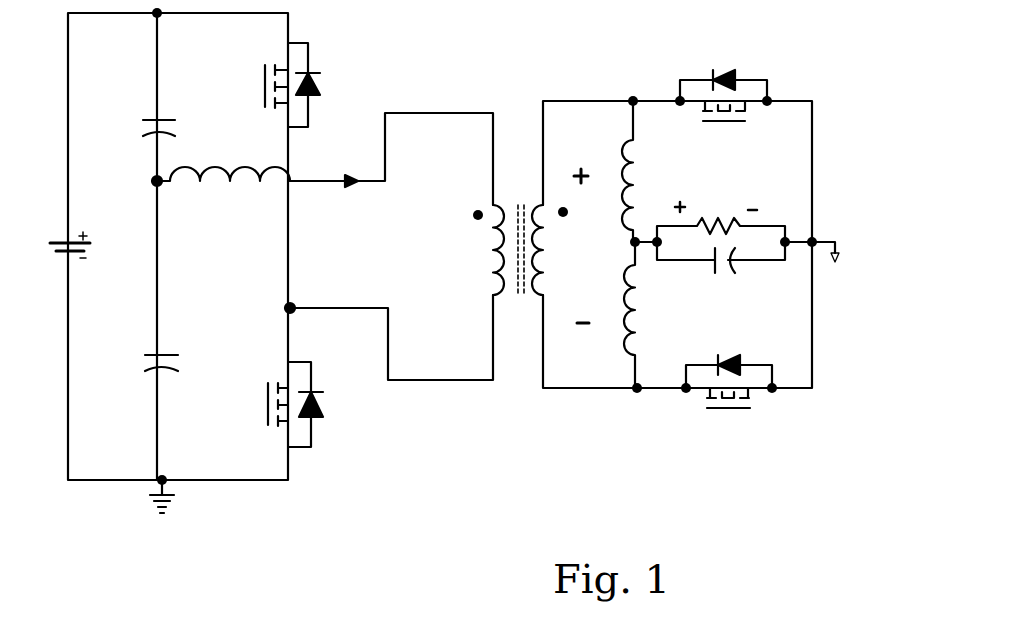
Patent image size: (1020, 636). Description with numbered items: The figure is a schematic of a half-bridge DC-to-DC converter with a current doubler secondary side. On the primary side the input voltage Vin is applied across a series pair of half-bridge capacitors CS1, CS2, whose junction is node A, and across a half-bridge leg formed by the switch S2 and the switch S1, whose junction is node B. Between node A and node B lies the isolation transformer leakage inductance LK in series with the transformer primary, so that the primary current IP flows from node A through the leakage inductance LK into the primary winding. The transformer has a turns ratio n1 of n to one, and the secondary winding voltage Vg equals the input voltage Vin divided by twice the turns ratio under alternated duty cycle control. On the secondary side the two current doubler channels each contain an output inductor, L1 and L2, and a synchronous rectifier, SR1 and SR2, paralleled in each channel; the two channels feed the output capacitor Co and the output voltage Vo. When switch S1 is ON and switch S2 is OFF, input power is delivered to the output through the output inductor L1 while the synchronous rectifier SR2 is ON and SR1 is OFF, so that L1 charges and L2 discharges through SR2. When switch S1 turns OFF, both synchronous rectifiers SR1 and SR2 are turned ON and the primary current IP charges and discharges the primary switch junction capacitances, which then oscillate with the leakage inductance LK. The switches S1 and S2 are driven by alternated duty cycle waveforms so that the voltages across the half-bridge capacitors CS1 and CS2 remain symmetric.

The input voltage Vin is at (51, 249).
The half-bridge capacitor CS1 is at (132, 123).
The half-bridge capacitor CS2 is at (137, 362).
The node A is at (136, 182).
The node B is at (274, 307).
The isolation transformer leakage inductance LK is at (231, 198).
The primary current IP is at (391, 175).
The switch S1 is at (320, 404).
The switch S2 is at (316, 85).
The transformer with turns ratio n:1 n1 is at (565, 265).
The secondary winding voltage Vg is at (590, 246).
The output inductor L1 is at (647, 171).
The output inductor L2 is at (653, 315).
The output voltage Vo is at (721, 212).
The output capacitor Co is at (721, 272).
The synchronous rectifier SR1 is at (723, 72).
The synchronous rectifier SR2 is at (729, 413).